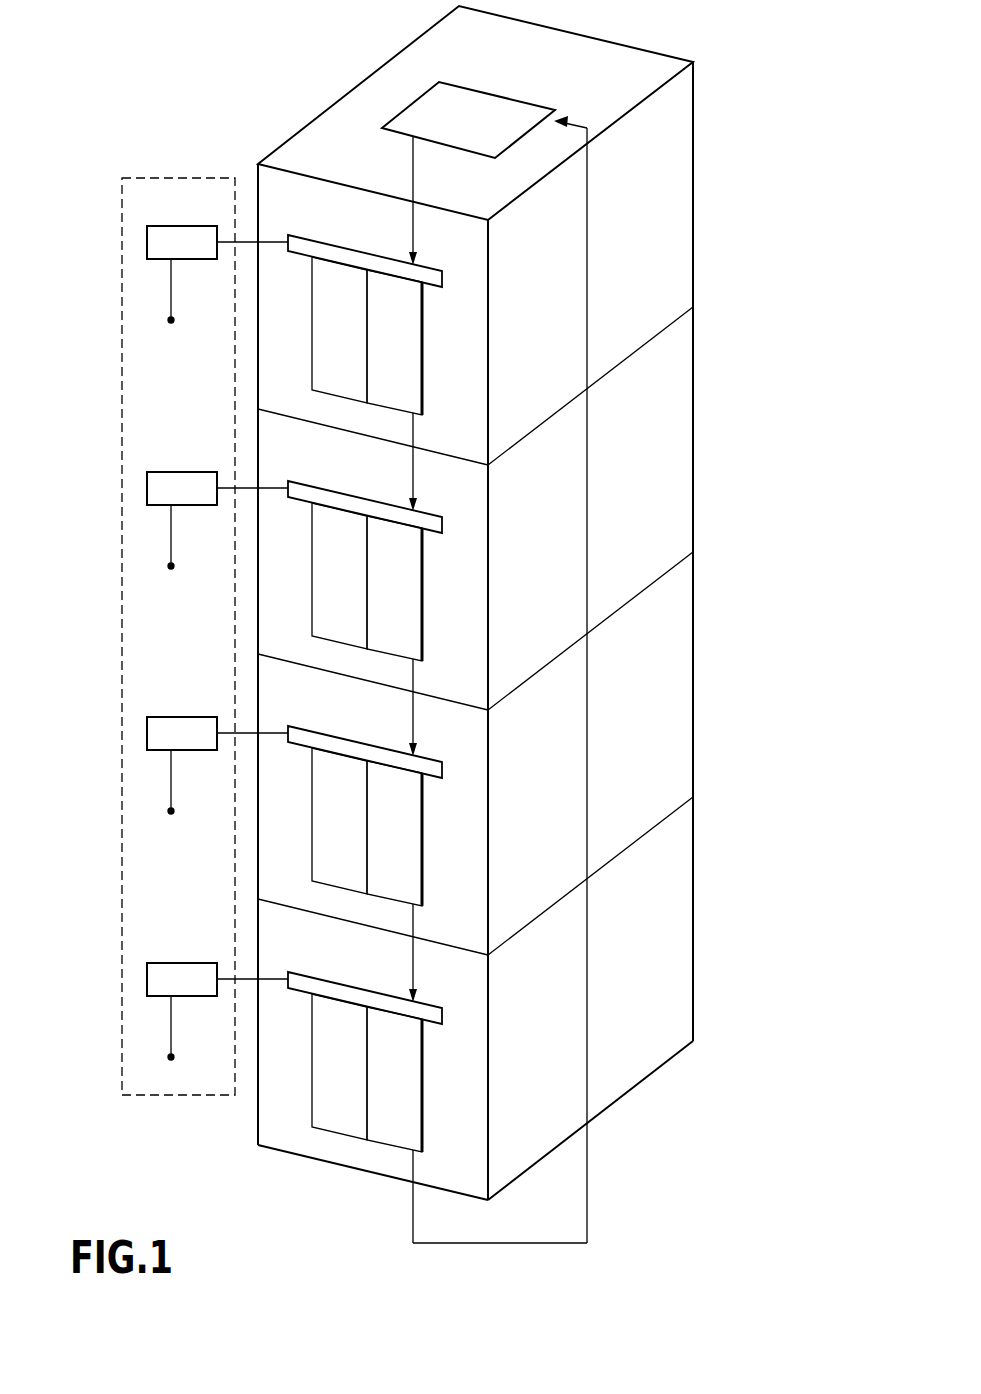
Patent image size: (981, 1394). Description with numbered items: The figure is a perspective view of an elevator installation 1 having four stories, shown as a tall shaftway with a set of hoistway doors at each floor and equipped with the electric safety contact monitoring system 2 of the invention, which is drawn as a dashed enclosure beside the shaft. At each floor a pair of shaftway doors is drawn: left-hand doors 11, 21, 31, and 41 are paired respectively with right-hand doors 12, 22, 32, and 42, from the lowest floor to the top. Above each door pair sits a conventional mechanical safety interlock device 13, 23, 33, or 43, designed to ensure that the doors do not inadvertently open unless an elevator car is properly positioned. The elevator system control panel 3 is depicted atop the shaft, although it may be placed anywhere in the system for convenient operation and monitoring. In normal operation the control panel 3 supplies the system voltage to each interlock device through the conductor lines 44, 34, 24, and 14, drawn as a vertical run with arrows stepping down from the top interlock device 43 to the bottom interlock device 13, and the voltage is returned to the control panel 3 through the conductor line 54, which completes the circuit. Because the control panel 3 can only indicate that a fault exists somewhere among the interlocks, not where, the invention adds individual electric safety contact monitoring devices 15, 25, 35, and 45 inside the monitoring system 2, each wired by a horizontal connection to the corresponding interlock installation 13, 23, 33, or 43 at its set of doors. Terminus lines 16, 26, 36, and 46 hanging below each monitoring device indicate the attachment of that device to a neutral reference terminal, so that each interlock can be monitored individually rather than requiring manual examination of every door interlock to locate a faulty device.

The elevator installation 1 is at (236, 69).
The electric safety contact monitoring system 2 is at (122, 345).
The elevator system control panel 3 is at (473, 132).
The left-hand door 11 is at (353, 1071).
The right-hand door 12 is at (409, 1084).
The mechanical safety interlock device 13 is at (442, 1022).
The conductor line 14 is at (413, 955).
The electric safety contact monitoring device 15 is at (147, 978).
The terminus line 16 is at (171, 1028).
The left-hand door 21 is at (353, 825).
The right-hand door 22 is at (409, 838).
The mechanical safety interlock device 23 is at (442, 776).
The conductor line 24 is at (413, 708).
The electric safety contact monitoring device 25 is at (147, 732).
The terminus line 26 is at (171, 782).
The left-hand door 31 is at (353, 580).
The right-hand door 32 is at (409, 593).
The mechanical safety interlock device 33 is at (442, 531).
The conductor line 34 is at (413, 462).
The electric safety contact monitoring device 35 is at (147, 487).
The terminus line 36 is at (171, 537).
The left-hand door 41 is at (353, 334).
The right-hand door 42 is at (409, 347).
The mechanical safety interlock device 43 is at (442, 285).
The conductor line 44 is at (414, 186).
The electric safety contact monitoring device 45 is at (147, 241).
The terminus line 46 is at (171, 291).
The conductor line 54 is at (587, 1185).